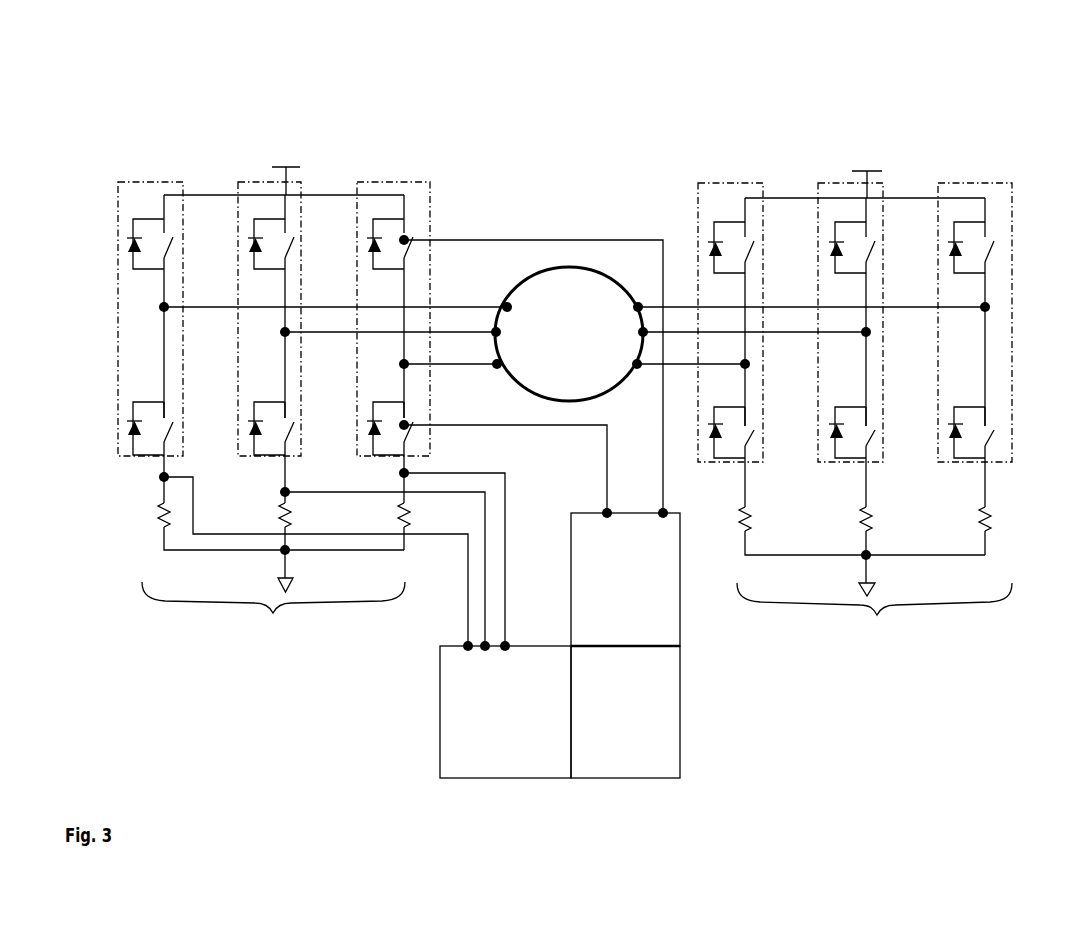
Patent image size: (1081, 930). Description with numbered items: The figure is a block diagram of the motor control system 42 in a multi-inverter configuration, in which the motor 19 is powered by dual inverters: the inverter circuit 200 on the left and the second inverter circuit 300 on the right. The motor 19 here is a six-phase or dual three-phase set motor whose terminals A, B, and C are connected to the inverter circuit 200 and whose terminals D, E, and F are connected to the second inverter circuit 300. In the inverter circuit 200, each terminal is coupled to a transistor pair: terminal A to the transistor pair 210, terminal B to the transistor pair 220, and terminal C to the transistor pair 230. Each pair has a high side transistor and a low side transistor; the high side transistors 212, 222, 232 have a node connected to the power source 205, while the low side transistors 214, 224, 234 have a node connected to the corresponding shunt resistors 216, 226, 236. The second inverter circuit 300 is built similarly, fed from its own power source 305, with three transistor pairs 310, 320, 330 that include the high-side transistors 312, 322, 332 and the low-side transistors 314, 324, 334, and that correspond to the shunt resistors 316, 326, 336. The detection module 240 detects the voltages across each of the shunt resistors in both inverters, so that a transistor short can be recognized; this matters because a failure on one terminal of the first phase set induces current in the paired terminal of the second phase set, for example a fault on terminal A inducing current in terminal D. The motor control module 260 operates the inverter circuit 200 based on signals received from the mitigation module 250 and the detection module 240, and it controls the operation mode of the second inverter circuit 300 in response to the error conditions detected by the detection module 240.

The motor control system 42 is at (262, 76).
The motor 19 is at (576, 376).
The power source 205 is at (368, 151).
The power source 305 is at (948, 156).
The inverter circuit 200 is at (382, 650).
The second inverter circuit 300 is at (972, 655).
The transistor pair 210 is at (127, 453).
The transistor pair 220 is at (238, 350).
The transistor pair 230 is at (357, 350).
The transistor pair 310 is at (710, 452).
The transistor pair 320 is at (818, 355).
The transistor pair 330 is at (938, 355).
The high side transistor 212 is at (159, 215).
The low side transistor 214 is at (159, 399).
The high side transistor 222 is at (280, 215).
The low side transistor 224 is at (280, 399).
The high side transistor 232 is at (399, 215).
The low side transistor 234 is at (399, 399).
The high-side transistor 312 is at (739, 220).
The low-side transistor 314 is at (739, 406).
The high-side transistor 322 is at (860, 219).
The low-side transistor 324 is at (860, 406).
The high-side transistor 332 is at (980, 223).
The low-side transistor 334 is at (980, 406).
The shunt resistor 216 is at (158, 531).
The shunt resistor 226 is at (278, 531).
The shunt resistor 236 is at (398, 527).
The shunt resistor 316 is at (737, 536).
The shunt resistor 326 is at (859, 533).
The shunt resistor 336 is at (979, 536).
The detection module 240 is at (557, 770).
The mitigation module 250 is at (675, 770).
The motor control module 260 is at (678, 636).